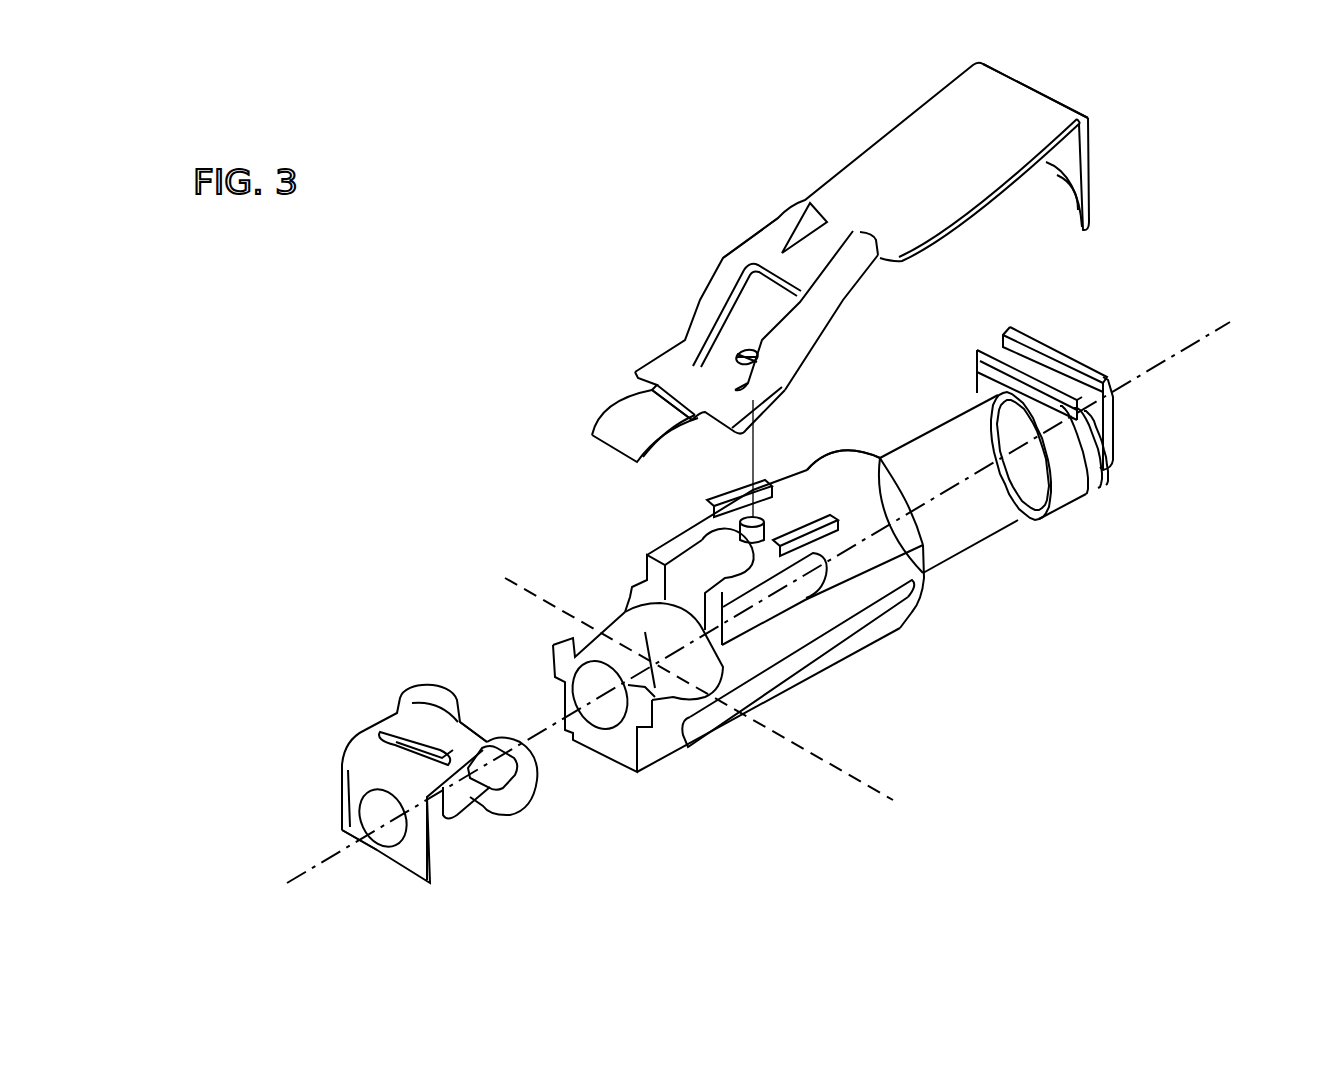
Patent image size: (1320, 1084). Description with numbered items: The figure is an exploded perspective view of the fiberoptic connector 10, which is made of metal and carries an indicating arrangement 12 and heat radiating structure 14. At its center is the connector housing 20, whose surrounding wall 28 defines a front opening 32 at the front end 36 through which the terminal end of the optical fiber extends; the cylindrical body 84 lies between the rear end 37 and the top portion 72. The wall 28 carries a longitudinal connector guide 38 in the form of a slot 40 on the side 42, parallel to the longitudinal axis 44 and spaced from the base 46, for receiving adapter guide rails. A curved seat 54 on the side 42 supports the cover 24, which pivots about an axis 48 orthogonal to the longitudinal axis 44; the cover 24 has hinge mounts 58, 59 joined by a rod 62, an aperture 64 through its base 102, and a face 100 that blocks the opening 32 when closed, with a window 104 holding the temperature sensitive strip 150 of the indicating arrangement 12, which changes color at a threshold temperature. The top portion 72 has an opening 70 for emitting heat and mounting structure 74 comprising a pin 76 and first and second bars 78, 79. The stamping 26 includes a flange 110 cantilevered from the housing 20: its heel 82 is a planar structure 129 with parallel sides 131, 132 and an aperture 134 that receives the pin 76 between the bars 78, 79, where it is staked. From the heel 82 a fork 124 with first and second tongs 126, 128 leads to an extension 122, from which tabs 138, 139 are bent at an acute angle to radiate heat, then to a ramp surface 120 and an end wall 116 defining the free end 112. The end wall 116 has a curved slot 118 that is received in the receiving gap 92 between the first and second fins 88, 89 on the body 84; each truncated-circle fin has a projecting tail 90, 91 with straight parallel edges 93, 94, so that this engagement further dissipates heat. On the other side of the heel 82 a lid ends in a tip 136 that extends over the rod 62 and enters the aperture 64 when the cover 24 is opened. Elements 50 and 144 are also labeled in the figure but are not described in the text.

The fiberoptic connector 10 is at (575, 215).
The indicating arrangement 12 is at (276, 857).
The heat radiating structure 14 is at (1135, 208).
The housing 20 is at (953, 558).
The cover 24 is at (340, 765).
The stamping 26 is at (858, 165).
The surrounding wall 28 is at (987, 537).
The front opening 32 is at (600, 728).
The front end 36 is at (625, 750).
The rear end 37 is at (1113, 452).
The longitudinal connector guide 38 is at (738, 765).
The slot 40 is at (780, 668).
The side 42 is at (790, 680).
The longitudinal axis 44 is at (1213, 335).
The base 46 is at (857, 655).
The axis 48 is at (890, 800).
The D-shaped opening 50 is at (497, 780).
The curved seat 54 is at (723, 667).
The hinge mount 58 is at (523, 810).
The hinge mount 59 is at (417, 683).
The rod 62 is at (457, 728).
The aperture 64 is at (395, 733).
The opening 70 is at (680, 560).
The top portion 72 is at (823, 460).
The mounting structure 74 is at (720, 476).
The pin 76 is at (760, 520).
The first bar 78 is at (833, 513).
The second bar 79 is at (760, 473).
The heel 82 is at (757, 350).
The cylindrical body 84 is at (912, 440).
The first fin 88 is at (1072, 493).
The second fin 89 is at (1103, 463).
The projecting tail 90 is at (990, 357).
The projecting tail 91 is at (1032, 333).
The receiving gap 92 is at (1097, 480).
The edge 93 is at (1068, 397).
The edge 94 is at (1063, 352).
The face 100 is at (408, 850).
The base 102 is at (358, 735).
The window 104 is at (377, 843).
The flange 110 is at (890, 148).
The free end 112 is at (1093, 170).
The end wall 116 is at (1073, 197).
The curved slot 118 is at (1060, 177).
The ramp surface 120 is at (946, 103).
The extension 122 is at (945, 240).
The fork 124 is at (723, 250).
The first tong 126 is at (685, 318).
The second tong 128 is at (797, 343).
The planar structure 129 is at (688, 398).
The side 131 is at (797, 363).
The side 132 is at (727, 347).
The aperture 134 is at (750, 347).
The tip 136 is at (615, 450).
The tab 138 is at (877, 237).
The tab 139 is at (795, 190).
The curl edge 144 is at (603, 422).
The temperature sensitive strip 150 is at (360, 812).